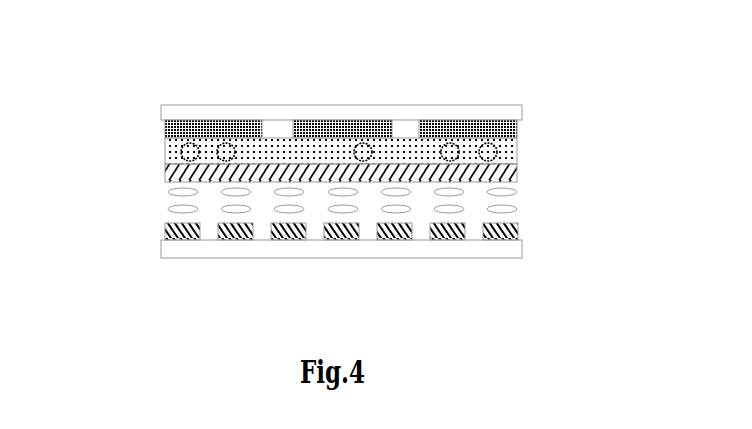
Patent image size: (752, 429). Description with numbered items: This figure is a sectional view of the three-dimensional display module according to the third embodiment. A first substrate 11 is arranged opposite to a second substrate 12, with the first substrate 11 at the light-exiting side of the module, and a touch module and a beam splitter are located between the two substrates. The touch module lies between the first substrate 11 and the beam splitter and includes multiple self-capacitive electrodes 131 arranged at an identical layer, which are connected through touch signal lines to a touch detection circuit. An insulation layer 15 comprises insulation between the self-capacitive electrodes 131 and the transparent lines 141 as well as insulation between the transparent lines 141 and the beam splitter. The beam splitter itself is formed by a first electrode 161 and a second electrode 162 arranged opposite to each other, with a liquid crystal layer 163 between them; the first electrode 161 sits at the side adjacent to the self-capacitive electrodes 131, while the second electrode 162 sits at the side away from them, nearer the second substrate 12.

The first substrate 11 is at (498, 113).
The second substrate 12 is at (497, 250).
The self-capacitive electrodes 131 is at (222, 122).
The transparent lines 141 is at (338, 122).
The insulation layer 15 is at (502, 158).
The first electrode 161 is at (167, 171).
The second electrode 162 is at (167, 232).
The liquid crystal layer 163 is at (173, 207).